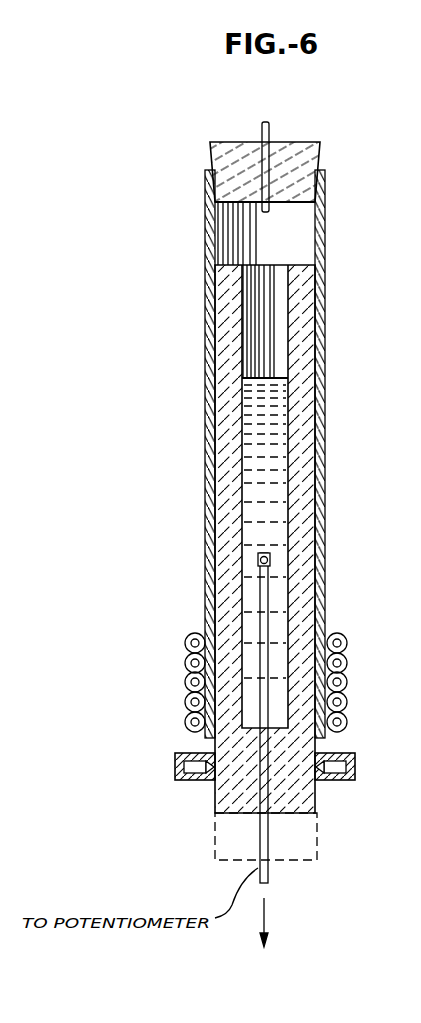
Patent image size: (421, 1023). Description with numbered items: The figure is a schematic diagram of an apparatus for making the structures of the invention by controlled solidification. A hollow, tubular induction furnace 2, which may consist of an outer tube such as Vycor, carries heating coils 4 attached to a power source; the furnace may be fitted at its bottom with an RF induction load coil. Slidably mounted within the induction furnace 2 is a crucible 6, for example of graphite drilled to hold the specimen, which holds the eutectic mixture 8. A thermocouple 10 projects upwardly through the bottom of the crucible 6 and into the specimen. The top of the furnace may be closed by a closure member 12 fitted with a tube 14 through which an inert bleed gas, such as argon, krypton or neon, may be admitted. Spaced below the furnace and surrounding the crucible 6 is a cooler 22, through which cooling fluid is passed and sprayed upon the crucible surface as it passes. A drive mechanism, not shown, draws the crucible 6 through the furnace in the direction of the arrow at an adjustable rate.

The induction furnace 2 is at (210, 424).
The heating coils 4 is at (186, 661).
The crucible 6 is at (312, 297).
The eutectic mixture 8 is at (283, 478).
The thermocouple 10 is at (272, 877).
The closure member 12 is at (319, 145).
The tube 14 is at (268, 138).
The cooler 22 is at (175, 765).